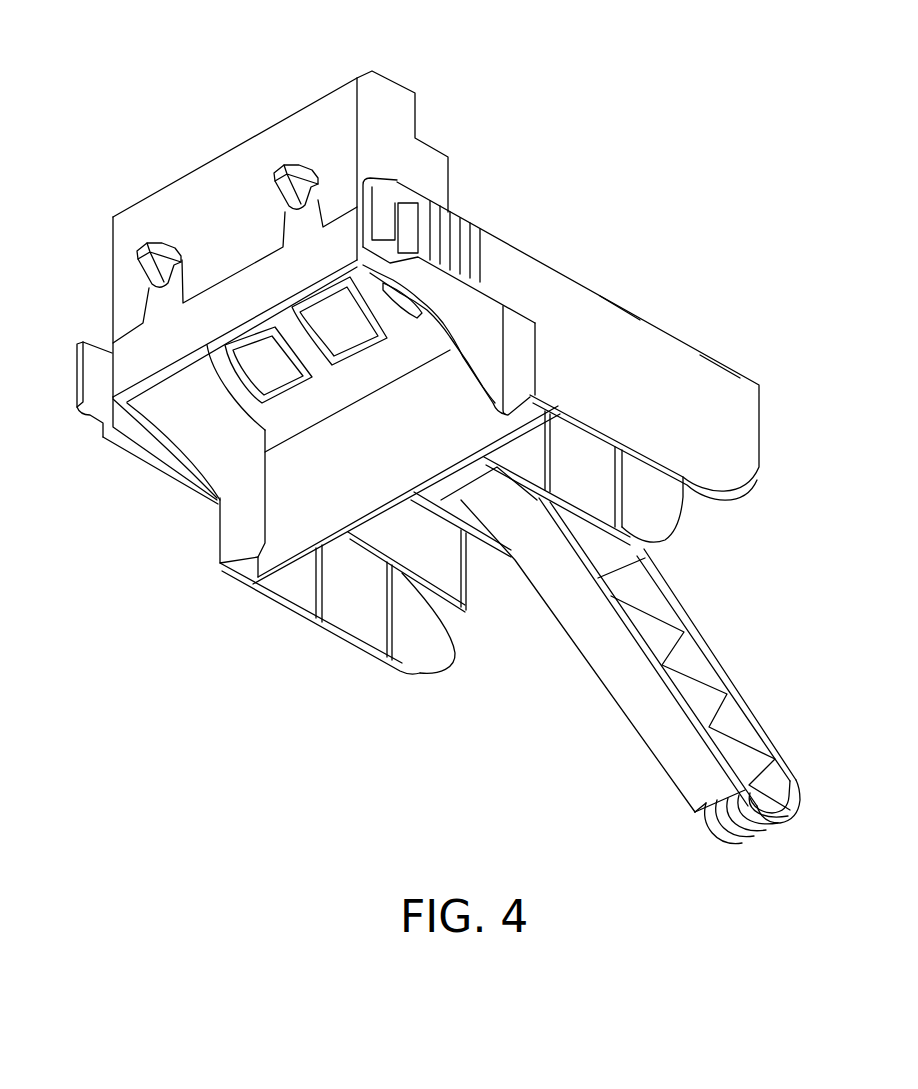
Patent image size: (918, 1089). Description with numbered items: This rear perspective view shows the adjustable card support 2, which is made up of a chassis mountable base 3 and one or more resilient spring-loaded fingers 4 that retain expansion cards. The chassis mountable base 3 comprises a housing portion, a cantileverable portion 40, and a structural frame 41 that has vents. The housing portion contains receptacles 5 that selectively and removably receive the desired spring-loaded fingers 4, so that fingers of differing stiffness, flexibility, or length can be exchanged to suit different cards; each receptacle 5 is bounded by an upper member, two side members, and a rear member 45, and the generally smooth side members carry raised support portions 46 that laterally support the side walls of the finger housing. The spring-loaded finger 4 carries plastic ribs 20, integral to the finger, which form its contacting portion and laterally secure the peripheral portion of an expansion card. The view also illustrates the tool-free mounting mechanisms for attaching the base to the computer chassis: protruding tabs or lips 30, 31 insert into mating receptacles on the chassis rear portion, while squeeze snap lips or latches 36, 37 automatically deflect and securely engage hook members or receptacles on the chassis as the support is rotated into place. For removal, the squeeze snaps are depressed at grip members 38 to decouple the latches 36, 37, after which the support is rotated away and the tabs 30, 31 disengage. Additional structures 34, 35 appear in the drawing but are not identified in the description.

The adjustable card support 2 is at (200, 762).
The chassis mountable base 3 is at (584, 209).
The spring-loaded finger 4 is at (762, 674).
The receptacles 5 is at (706, 525).
The plastic ribs 20 is at (712, 832).
The protruding tab or lip 30 is at (151, 242).
The protruding tab or lip 31 is at (288, 163).
The arm top face 34 is at (553, 282).
The lower lip 35 is at (150, 458).
The squeeze snap lip or latch 36 is at (380, 210).
The squeeze snap lip or latch 37 is at (81, 418).
The grip members 38 is at (458, 247).
The cantileverable portion 40 is at (718, 309).
The structural frame 41 is at (471, 72).
The rear member 45 is at (360, 478).
The raised support portions 46 is at (452, 635).